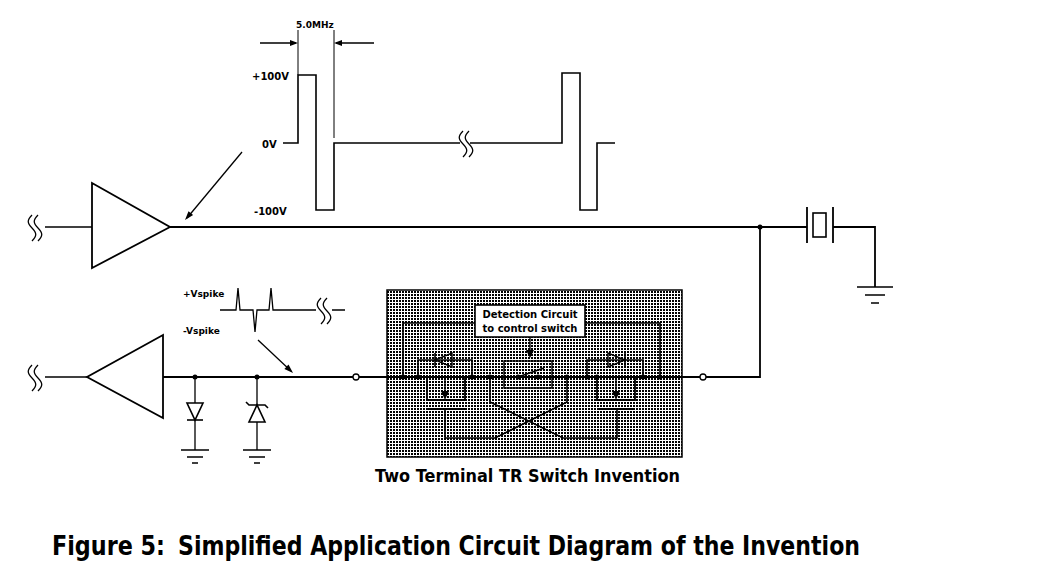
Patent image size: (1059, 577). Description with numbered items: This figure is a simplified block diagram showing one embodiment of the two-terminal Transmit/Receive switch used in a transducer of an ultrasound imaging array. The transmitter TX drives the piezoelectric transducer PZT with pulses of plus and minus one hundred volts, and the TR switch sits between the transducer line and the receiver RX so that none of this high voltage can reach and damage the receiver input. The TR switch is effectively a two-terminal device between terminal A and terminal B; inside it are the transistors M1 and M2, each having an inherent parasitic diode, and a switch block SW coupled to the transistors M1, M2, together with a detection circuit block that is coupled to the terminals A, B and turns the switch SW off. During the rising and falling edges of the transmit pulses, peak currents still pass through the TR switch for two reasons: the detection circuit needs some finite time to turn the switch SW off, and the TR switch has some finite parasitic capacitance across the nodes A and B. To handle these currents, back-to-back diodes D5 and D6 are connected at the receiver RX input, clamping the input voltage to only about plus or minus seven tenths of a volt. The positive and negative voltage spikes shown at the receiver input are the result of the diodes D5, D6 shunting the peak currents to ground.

The transmitter TX is at (99, 236).
The receiver RX is at (95, 386).
The diode D5 is at (202, 419).
The diode D6 is at (264, 419).
The terminal A is at (354, 365).
The terminal B is at (708, 368).
The switch block SW is at (528, 382).
The transistor M1 is at (483, 395).
The transistor M2 is at (574, 395).
The piezoelectric transducer PZT is at (850, 255).